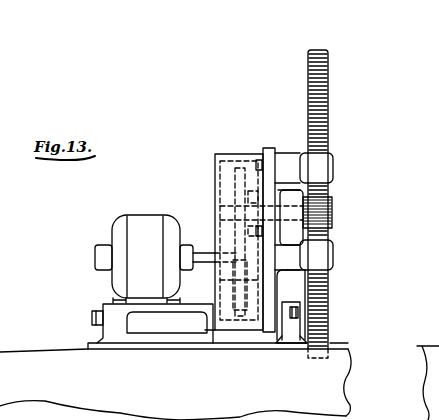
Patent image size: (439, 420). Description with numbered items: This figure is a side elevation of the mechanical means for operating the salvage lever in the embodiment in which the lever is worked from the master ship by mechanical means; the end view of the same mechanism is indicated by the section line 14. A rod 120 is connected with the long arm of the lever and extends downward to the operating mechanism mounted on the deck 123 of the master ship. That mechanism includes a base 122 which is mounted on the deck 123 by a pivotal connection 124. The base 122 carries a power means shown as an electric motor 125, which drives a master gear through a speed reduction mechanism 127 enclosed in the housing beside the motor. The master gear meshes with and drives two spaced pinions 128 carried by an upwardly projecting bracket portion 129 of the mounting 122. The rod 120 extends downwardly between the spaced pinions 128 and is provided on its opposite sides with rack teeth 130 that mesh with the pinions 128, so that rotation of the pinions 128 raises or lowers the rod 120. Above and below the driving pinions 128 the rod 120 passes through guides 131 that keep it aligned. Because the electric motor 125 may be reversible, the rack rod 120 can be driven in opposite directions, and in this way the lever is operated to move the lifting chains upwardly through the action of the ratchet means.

The section line 14- 14 is at (317, 28).
The rod 120 is at (318, 82).
The base 122 is at (237, 330).
The deck 123 is at (177, 347).
The pivotal connection 124 is at (290, 312).
The electric motor 125 is at (138, 228).
The speed reduction mechanism 127 is at (232, 180).
The pinions 128 is at (322, 213).
The bracket portion 129 is at (268, 158).
The rack teeth 130 is at (326, 130).
The guides 131 is at (323, 170).